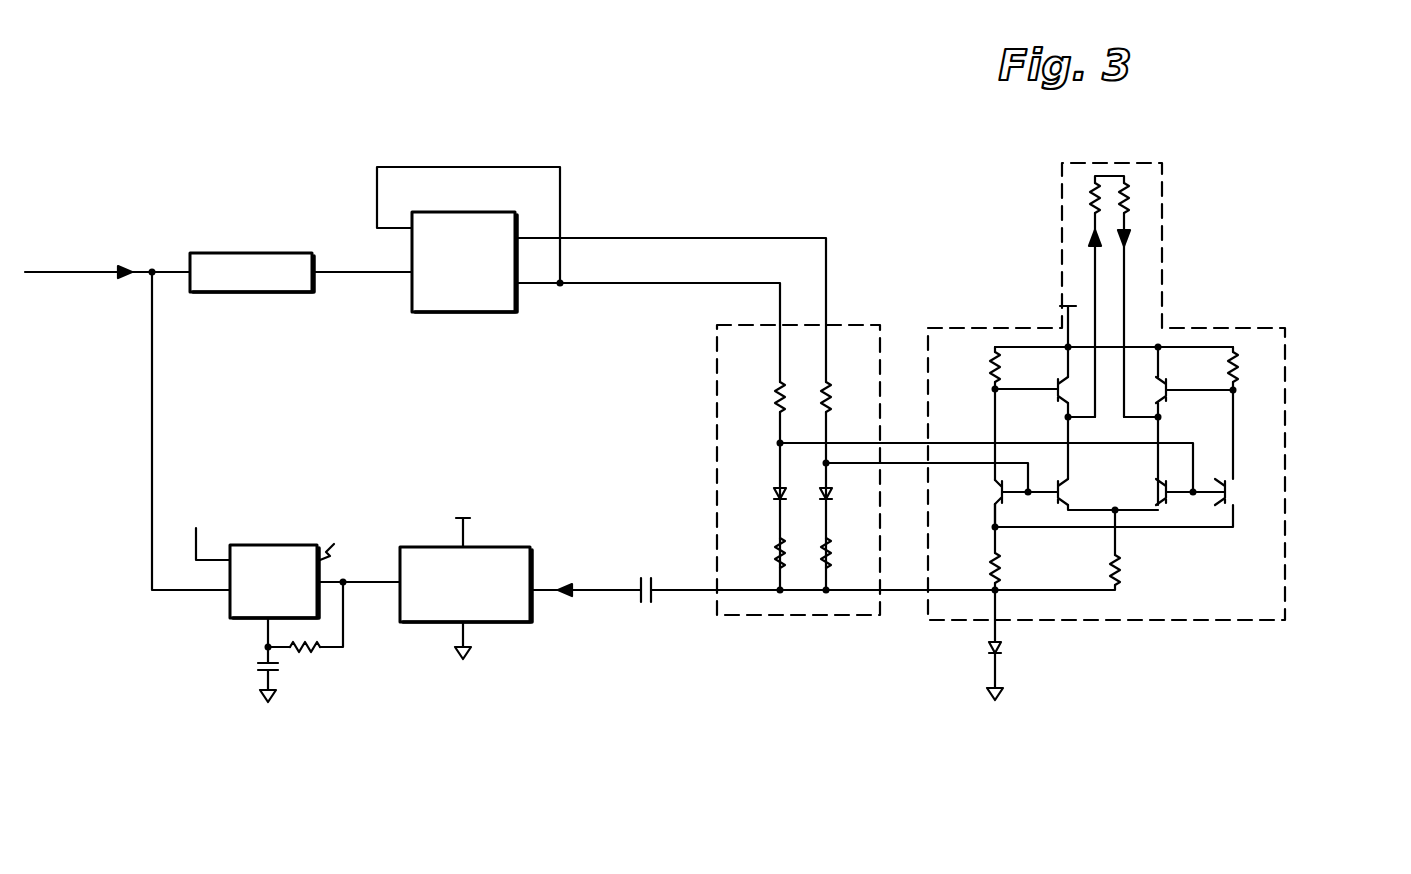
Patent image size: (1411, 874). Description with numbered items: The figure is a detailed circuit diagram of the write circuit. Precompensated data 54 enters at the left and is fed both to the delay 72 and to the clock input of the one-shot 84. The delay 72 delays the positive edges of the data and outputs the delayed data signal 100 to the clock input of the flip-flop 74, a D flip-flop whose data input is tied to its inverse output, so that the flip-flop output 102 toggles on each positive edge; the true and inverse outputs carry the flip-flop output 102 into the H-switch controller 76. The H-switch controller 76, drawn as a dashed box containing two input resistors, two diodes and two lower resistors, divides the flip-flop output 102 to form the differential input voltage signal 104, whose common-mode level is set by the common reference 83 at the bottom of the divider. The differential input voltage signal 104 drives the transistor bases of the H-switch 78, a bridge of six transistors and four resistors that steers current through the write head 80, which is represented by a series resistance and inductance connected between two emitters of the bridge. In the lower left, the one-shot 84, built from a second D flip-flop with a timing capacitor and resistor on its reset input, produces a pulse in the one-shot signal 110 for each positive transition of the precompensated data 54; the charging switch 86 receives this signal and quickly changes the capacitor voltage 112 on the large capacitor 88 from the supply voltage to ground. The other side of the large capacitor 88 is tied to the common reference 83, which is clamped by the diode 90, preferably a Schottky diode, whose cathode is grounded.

The precompensated data 54 is at (126, 407).
The delay 72 is at (222, 295).
The delayed data signal 100 is at (352, 278).
The flip-flop 74 is at (455, 315).
The flip-flop output 102 is at (650, 238).
The H-switch controller 76 is at (714, 510).
The differential input voltage signal 104 is at (908, 440).
The H-switch 78 is at (1285, 420).
The write head 80 is at (1062, 218).
The common reference 83 is at (838, 597).
The one-shot 84 is at (283, 597).
The charging switch 86 is at (418, 624).
The large capacitor 88 is at (652, 604).
The diode 90 is at (986, 650).
The one-shot signal 110 is at (366, 582).
The capacitor voltage signal 112 is at (590, 590).